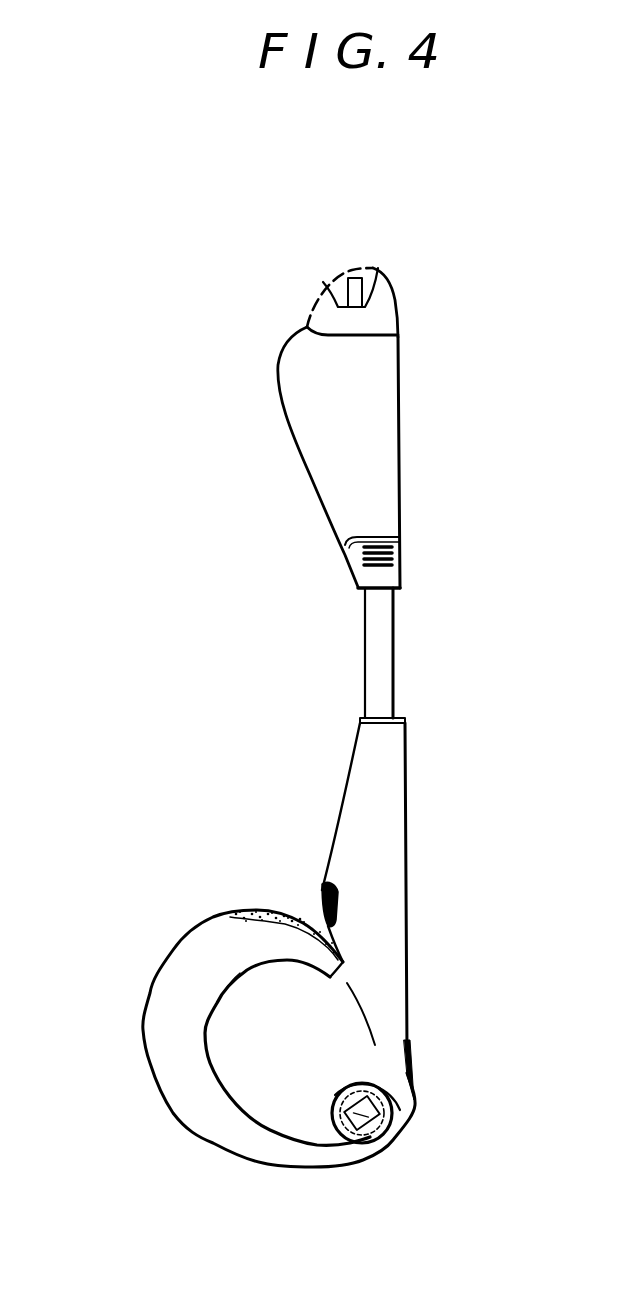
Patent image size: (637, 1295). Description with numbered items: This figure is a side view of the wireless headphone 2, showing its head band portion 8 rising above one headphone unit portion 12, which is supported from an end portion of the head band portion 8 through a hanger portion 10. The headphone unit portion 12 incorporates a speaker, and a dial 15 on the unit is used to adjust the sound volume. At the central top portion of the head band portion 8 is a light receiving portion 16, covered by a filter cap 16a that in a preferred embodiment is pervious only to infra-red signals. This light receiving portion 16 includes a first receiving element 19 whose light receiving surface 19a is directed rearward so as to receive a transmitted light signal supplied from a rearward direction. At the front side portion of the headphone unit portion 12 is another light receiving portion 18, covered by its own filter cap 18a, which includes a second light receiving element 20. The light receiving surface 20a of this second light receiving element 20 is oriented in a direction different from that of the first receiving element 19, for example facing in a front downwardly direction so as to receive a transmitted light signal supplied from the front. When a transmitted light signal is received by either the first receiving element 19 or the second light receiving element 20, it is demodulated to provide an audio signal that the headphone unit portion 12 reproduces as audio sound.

The wireless headphone 2 is at (258, 510).
The head band portion 8 is at (300, 410).
The hanger portion 10 is at (377, 643).
The headphone unit portion 12 is at (248, 1075).
The dial 15 is at (321, 898).
The light receiving portion 16 is at (300, 297).
The filter cap 16a is at (383, 313).
The light receiving portion 18 is at (380, 1135).
The filter cap 18a is at (380, 1083).
The first receiving element 19 is at (343, 274).
The light receiving surface 19a is at (340, 290).
The second light receiving element 20 is at (343, 1147).
The light receiving surface 20a is at (363, 1153).